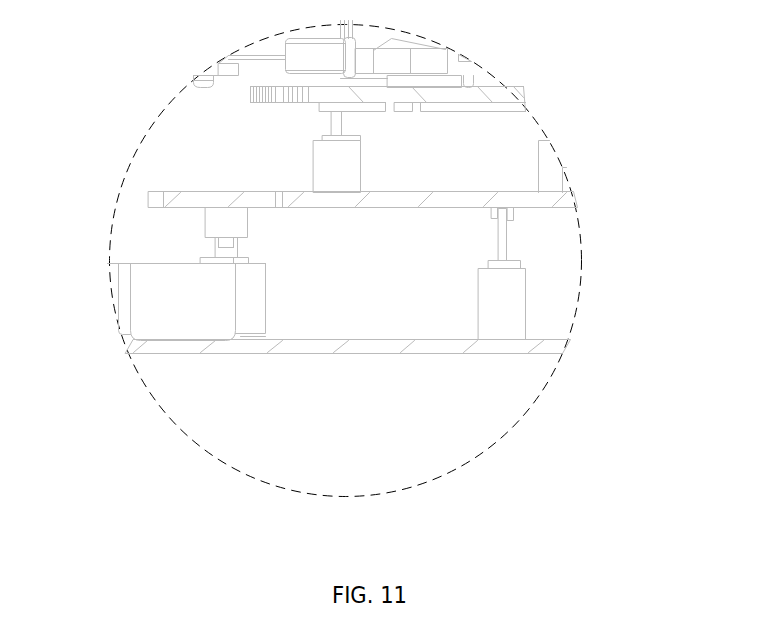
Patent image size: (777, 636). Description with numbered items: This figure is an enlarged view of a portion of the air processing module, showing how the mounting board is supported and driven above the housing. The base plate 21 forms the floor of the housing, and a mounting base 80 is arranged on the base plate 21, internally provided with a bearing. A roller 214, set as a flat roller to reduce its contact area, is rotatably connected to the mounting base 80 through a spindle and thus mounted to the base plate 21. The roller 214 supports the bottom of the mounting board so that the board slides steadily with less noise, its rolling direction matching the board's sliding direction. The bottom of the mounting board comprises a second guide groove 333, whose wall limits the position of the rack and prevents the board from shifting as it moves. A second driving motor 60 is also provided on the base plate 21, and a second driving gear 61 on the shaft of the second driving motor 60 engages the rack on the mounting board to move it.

The base plate 21 is at (495, 350).
The second driving gear 61 is at (183, 205).
The second driving motor 60 is at (148, 290).
The mounting base 80 is at (515, 307).
The roller 214 is at (507, 250).
The second guide groove 333 is at (507, 210).